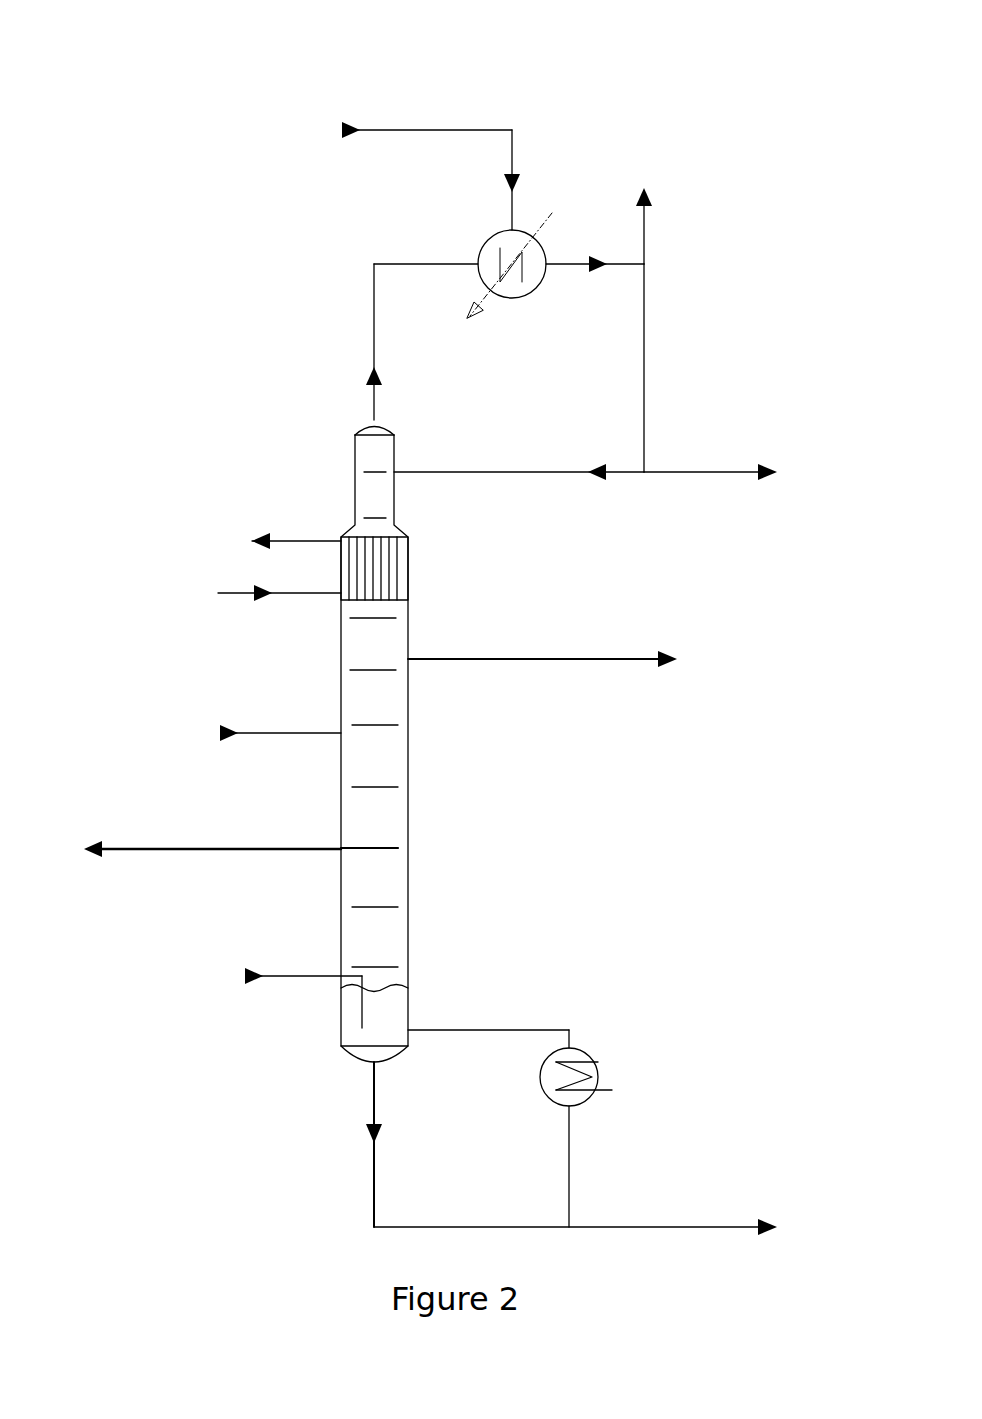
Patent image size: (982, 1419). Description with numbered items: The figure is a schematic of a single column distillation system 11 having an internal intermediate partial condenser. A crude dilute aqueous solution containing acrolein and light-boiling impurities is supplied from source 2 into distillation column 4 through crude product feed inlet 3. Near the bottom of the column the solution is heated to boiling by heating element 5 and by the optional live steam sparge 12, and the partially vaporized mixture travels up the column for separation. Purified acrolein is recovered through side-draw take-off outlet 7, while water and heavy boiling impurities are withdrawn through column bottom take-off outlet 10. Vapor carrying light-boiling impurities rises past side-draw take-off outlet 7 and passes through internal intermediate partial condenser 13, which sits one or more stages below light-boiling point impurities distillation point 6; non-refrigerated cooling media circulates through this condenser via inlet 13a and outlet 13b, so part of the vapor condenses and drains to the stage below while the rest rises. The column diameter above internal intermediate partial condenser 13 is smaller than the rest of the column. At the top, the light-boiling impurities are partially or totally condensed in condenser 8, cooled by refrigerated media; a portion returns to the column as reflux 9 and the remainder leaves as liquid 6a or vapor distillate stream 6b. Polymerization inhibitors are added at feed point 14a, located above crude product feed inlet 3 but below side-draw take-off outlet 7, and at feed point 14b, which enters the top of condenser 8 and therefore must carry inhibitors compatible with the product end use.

The single column distillation system 11 is at (192, 77).
The source 2 is at (178, 851).
The crude product feed inlet 3 is at (338, 849).
The distillation column 4 is at (408, 803).
The heating element 5 is at (598, 1060).
The light-boiling point impurities distillation point 6 is at (718, 345).
The liquid distillate stream 6a is at (770, 486).
The vapor distillate stream 6b is at (648, 190).
The side-draw take-off outlet 7 is at (532, 662).
The condenser 8 is at (490, 242).
The reflux 9 is at (510, 475).
The column bottom take-off outlet 10 is at (658, 1227).
The live steam sparge 12 is at (245, 976).
The internal intermediate partial condenser 13 is at (408, 574).
The inlet 13a is at (233, 596).
The outlet 13b is at (218, 541).
The feed point 14a is at (220, 733).
The feed point 14b is at (352, 130).